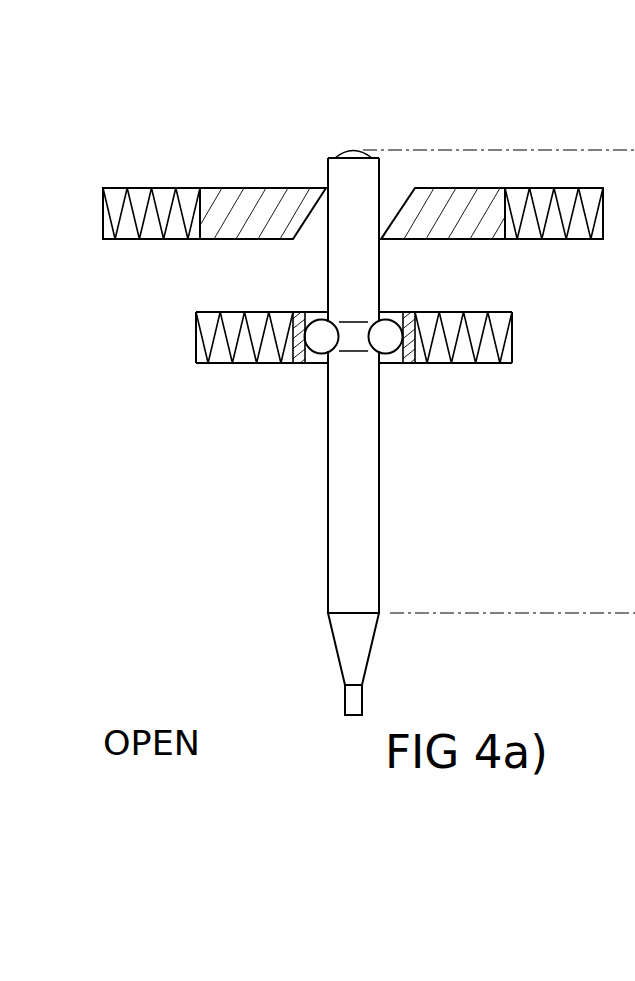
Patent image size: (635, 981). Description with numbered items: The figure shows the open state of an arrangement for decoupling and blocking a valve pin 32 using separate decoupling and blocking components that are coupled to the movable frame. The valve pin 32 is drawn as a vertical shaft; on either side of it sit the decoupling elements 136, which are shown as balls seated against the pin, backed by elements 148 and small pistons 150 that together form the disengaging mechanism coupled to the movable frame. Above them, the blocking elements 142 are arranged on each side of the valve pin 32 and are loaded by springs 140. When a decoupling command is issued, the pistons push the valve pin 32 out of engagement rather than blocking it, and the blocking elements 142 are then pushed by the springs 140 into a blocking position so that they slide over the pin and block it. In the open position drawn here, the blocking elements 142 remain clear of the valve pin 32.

The valve pin 32 is at (370, 535).
The spring 140 is at (145, 200).
The blocking element 142 is at (246, 200).
The disengaging mechanism element 148 is at (212, 338).
The small piston 150 is at (302, 322).
The decoupling element 136 is at (322, 342).